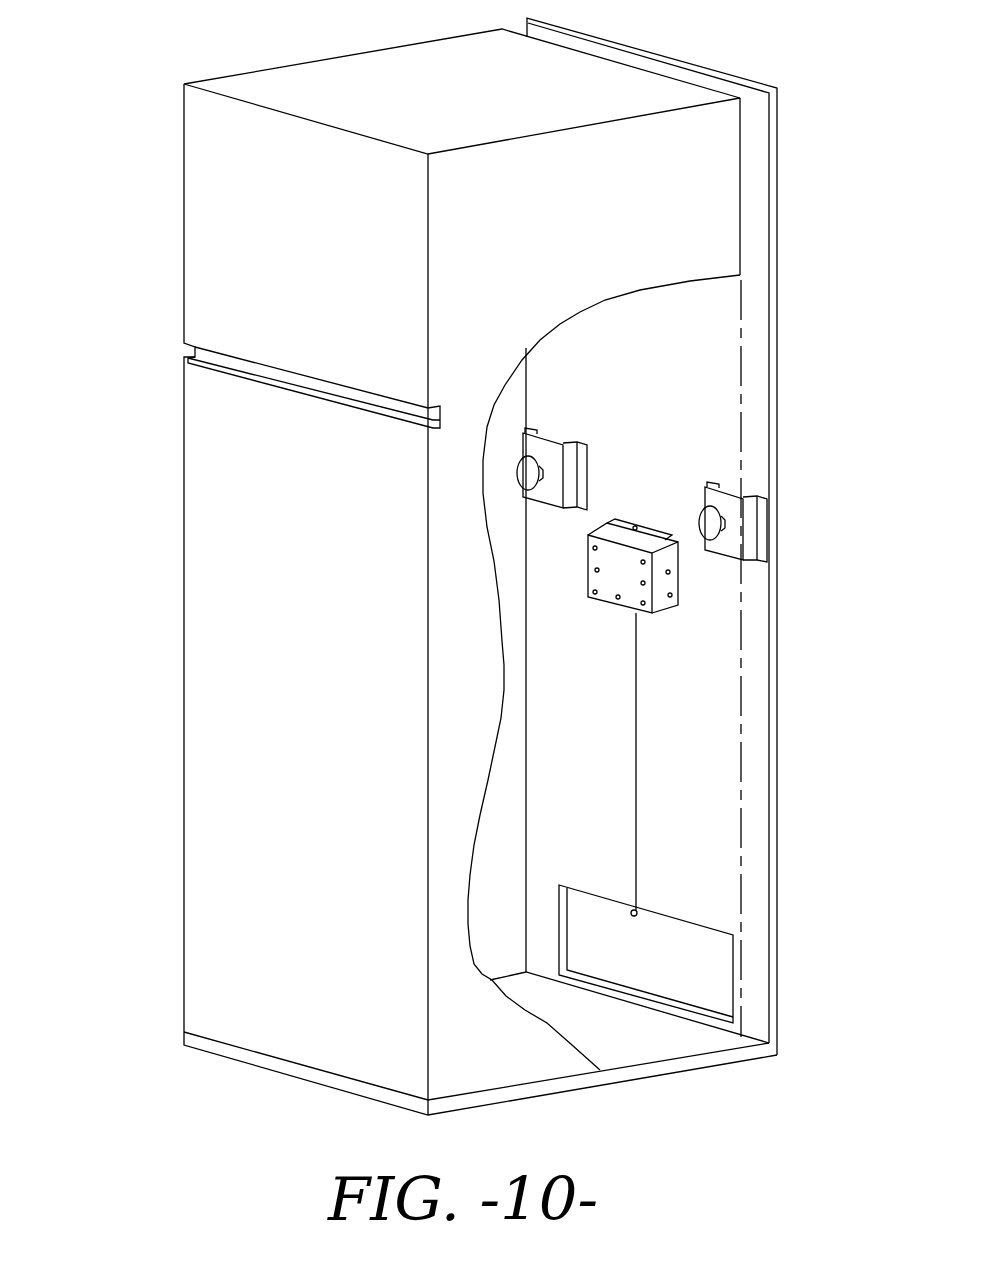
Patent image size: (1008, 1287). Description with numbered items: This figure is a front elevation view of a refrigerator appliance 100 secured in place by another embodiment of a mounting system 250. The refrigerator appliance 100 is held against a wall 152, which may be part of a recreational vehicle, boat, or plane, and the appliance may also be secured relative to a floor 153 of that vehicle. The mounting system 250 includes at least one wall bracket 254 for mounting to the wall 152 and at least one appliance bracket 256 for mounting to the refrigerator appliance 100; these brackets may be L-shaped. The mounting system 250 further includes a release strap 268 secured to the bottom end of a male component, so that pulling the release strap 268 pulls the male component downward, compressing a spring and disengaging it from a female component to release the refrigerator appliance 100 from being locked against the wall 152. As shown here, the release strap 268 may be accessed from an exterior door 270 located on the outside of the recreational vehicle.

The refrigerator appliance 100 is at (138, 173).
The wall 152 is at (780, 280).
The floor 153 is at (650, 1077).
The mounting system 250 is at (800, 523).
The wall bracket 254 is at (688, 593).
The appliance bracket 256 is at (655, 625).
The release strap 268 is at (637, 767).
The exterior door 270 is at (695, 963).